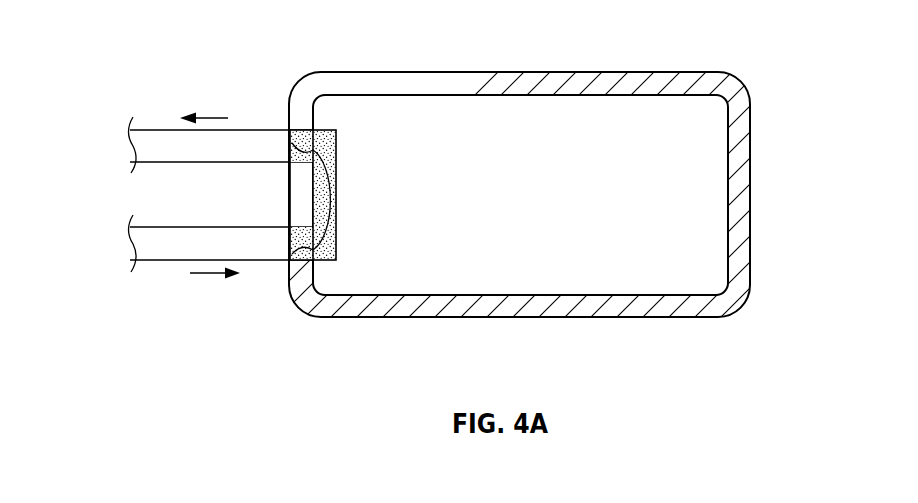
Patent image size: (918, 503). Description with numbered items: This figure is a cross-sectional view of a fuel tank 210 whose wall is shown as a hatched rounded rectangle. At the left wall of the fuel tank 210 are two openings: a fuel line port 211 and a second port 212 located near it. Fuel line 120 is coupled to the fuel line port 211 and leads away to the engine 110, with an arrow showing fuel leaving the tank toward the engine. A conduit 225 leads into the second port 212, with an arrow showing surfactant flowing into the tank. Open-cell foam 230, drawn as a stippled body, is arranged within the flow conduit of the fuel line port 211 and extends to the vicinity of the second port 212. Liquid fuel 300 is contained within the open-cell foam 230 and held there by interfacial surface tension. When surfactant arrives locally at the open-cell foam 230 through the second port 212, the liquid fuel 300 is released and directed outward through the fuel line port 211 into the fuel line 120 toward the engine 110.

The engine 110 is at (70, 122).
The fuel line 120 is at (153, 128).
The fuel tank 210 is at (752, 187).
The fuel line port 211 is at (333, 147).
The second port 212 is at (313, 278).
The conduit 225 is at (148, 262).
The open-cell foam 230 is at (336, 163).
The liquid fuel 300 is at (313, 197).